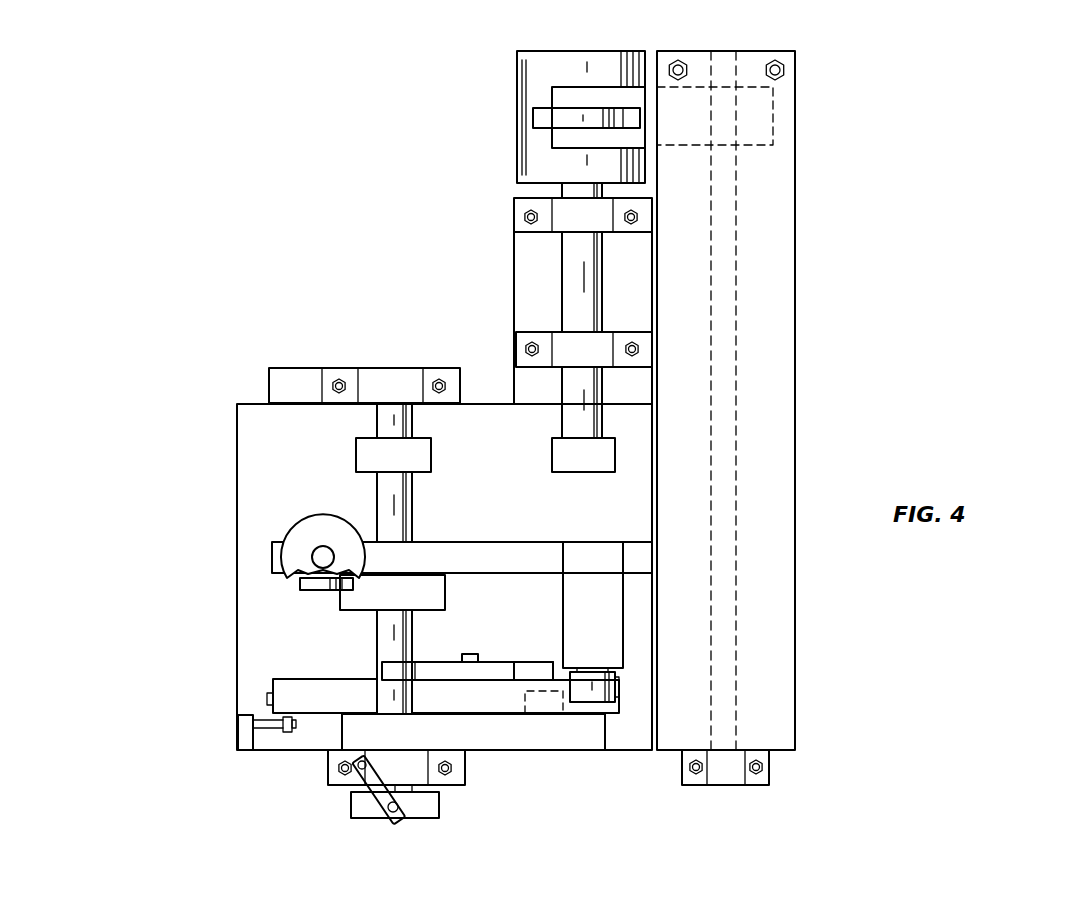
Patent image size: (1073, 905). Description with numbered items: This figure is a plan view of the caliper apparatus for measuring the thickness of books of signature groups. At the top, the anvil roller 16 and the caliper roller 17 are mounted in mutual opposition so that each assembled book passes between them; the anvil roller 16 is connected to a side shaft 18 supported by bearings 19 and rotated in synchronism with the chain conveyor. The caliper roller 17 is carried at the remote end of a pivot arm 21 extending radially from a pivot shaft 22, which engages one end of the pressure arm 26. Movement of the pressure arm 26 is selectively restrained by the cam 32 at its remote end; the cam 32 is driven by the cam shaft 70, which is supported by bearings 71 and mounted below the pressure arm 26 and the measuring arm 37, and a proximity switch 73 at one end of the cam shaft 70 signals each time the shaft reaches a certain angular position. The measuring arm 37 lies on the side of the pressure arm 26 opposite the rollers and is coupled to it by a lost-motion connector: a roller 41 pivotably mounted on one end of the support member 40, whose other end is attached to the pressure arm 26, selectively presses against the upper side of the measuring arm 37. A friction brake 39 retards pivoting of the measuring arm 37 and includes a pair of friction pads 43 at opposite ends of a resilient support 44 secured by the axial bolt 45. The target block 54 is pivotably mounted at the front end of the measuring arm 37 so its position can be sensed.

The anvil roller 16 is at (520, 88).
The caliper roller 17 is at (543, 130).
The side shaft 18 is at (562, 284).
The bearings 19 is at (630, 330).
The pivot arm 21 is at (600, 86).
The pivot shaft 22 is at (736, 210).
The pressure arm 26 is at (450, 534).
The cam 32 is at (358, 612).
The measuring arm 37 is at (508, 714).
The friction brake 39 is at (489, 625).
The support member 40 is at (616, 617).
The roller 41 is at (619, 683).
The friction pads 43 is at (500, 676).
The resilient support 44 is at (496, 662).
The axial bolt 45 is at (472, 654).
The target block 54 is at (295, 679).
The cam shaft 70 is at (413, 493).
The bearings 71 is at (383, 368).
The proximity switch 73 is at (375, 818).